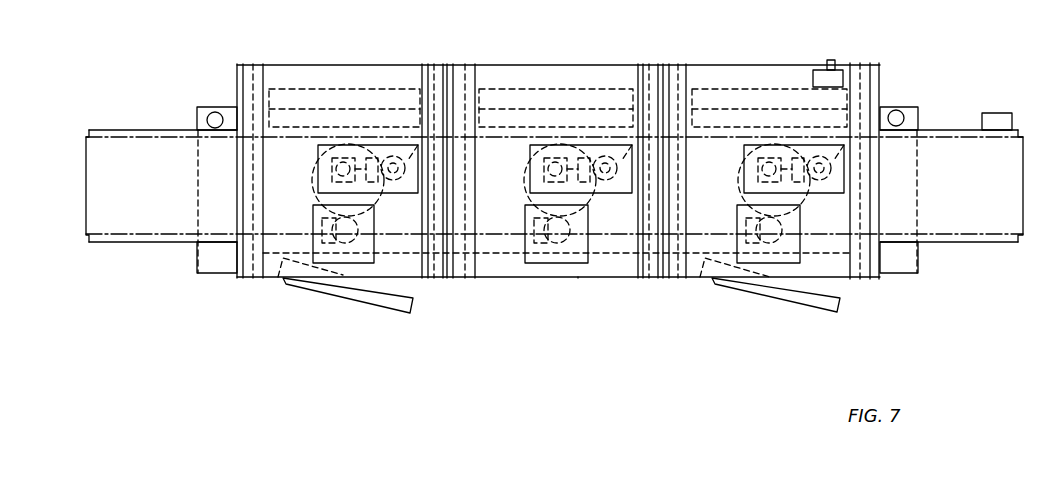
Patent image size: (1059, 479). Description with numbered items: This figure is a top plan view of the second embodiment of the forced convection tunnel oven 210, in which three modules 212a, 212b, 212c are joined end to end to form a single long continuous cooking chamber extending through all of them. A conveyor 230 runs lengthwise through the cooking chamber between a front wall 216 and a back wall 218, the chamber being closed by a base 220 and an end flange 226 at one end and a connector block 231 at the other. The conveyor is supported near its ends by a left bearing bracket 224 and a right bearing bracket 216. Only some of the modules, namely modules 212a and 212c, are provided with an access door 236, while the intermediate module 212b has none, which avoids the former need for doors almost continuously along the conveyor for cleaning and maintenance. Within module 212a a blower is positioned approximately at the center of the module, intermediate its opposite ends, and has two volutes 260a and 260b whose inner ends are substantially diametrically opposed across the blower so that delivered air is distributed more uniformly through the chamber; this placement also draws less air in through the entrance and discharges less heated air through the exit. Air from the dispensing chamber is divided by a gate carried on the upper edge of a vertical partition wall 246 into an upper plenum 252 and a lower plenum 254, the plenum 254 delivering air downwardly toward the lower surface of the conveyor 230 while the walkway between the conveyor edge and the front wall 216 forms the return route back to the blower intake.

The apparatus 210 is at (97, 123).
The conveyor 230 is at (173, 155).
The back wall 218 is at (493, 80).
The base 220 is at (693, 279).
The end flange 226 is at (882, 83).
The connector block 231 is at (993, 113).
The left bearing bracket 224 is at (233, 256).
The front wall 216 is at (880, 275).
The plenum 252 is at (280, 98).
The plenum 254 is at (375, 120).
The vertical partition wall 246 is at (755, 108).
The volute 260b is at (372, 148).
The volute 260a is at (386, 184).
The access door 236 is at (322, 283).
The module 212a is at (277, 288).
The module 212b is at (578, 288).
The module 212c is at (912, 326).